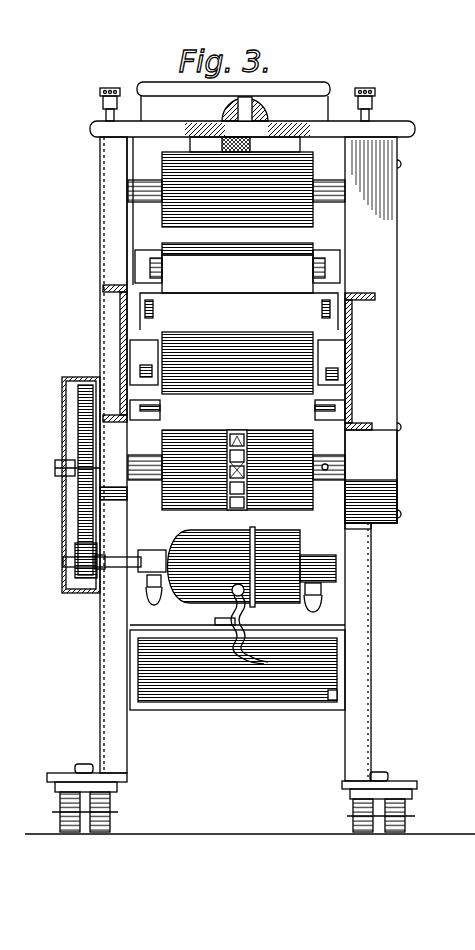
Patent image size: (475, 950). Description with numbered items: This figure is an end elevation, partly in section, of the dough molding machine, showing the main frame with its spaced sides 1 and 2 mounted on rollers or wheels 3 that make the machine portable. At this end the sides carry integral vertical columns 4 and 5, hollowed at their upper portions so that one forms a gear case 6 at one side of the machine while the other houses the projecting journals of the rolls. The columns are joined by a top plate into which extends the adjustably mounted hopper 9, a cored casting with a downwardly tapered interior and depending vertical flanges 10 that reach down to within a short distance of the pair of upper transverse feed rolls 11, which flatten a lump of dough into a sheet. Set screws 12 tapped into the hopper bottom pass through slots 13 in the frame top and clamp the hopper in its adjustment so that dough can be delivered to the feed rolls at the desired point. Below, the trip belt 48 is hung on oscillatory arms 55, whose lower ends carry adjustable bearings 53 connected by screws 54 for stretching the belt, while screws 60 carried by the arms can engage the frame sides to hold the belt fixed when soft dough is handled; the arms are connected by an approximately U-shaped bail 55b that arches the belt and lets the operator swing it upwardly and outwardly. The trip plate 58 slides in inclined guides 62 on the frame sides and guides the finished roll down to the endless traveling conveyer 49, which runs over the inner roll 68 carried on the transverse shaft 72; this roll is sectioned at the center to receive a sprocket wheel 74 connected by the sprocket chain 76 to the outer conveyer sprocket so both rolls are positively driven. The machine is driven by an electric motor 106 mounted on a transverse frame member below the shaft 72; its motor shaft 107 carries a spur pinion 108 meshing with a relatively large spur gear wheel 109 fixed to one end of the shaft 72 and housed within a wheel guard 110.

The side 1 is at (103, 698).
The side 2 is at (372, 680).
The rollers or wheels 3 is at (100, 806).
The vertical column 4 is at (103, 273).
The vertical column 5 is at (398, 276).
The gear case 6 is at (385, 233).
The hopper 9 is at (233, 101).
The depending vertical flanges 10 is at (296, 147).
The feed rolls 11 is at (165, 170).
The set screws 12 is at (222, 145).
The slots 13 is at (252, 112).
The trip belt 48 is at (237, 352).
The endless traveling conveyer 49 is at (296, 513).
The adjustable bearings 53 is at (130, 352).
The screws 54 is at (140, 371).
The oscillatory arms 55 is at (140, 280).
The bail 55b is at (250, 294).
The trip plate 58 is at (306, 430).
The screws 60 is at (154, 313).
The guides 62 is at (140, 413).
The inner roll 68 is at (165, 446).
The transverse shaft 72 is at (55, 468).
The sprocket wheel 74 is at (248, 470).
The sprocket chain 76 is at (237, 430).
The electric motor 106 is at (241, 595).
The motor shaft 107 is at (66, 559).
The spur pinion 108 is at (86, 582).
The spur gear wheel 109 is at (78, 430).
The wheel guard 110 is at (66, 394).